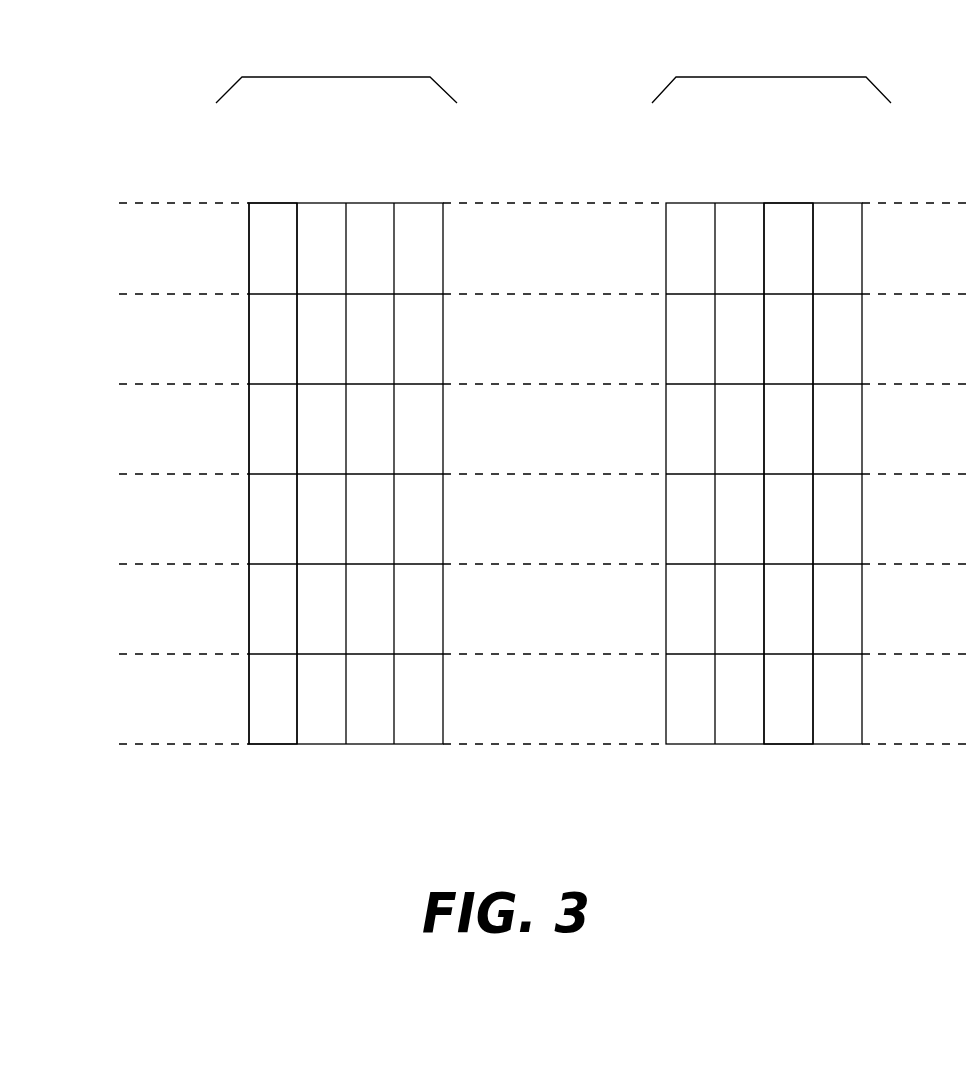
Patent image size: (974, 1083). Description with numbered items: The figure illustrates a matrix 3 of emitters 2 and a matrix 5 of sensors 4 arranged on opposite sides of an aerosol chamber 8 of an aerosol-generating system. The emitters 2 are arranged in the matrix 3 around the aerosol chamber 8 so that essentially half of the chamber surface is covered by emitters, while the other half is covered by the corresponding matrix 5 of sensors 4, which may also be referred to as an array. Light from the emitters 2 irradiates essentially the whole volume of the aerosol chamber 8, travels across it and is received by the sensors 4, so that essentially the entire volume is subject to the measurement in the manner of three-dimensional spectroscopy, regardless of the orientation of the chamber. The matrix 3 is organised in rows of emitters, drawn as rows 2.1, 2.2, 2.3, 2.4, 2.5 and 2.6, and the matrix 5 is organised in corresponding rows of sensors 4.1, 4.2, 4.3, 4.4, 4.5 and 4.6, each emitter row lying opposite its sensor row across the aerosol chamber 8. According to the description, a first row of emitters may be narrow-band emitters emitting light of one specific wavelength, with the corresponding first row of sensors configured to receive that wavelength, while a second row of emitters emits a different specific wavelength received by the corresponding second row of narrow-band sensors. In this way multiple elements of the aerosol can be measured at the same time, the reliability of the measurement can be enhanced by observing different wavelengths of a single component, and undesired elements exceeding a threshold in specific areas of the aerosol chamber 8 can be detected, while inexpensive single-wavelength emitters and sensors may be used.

The emitter 2 is at (273, 226).
The matrix of emitters 3 is at (355, 77).
The sensor 4 is at (788, 222).
The matrix of sensors 5 is at (793, 77).
The aerosol chamber 8 is at (533, 203).
The first array row segment 1 2.1 is at (184, 232).
The first array row segment 2 2.2 is at (184, 323).
The first array row segment 3 2.3 is at (184, 413).
The first array row segment 4 2.4 is at (184, 503).
The first array row segment 5 2.5 is at (184, 593).
The first array row segment 6 2.6 is at (184, 699).
The second array row segment 1 4.1 is at (918, 232).
The second array row segment 2 4.2 is at (918, 323).
The second array row segment 3 4.3 is at (918, 413).
The second array row segment 4 4.4 is at (918, 503).
The second array row segment 5 4.5 is at (918, 593).
The second array row segment 6 4.6 is at (918, 699).